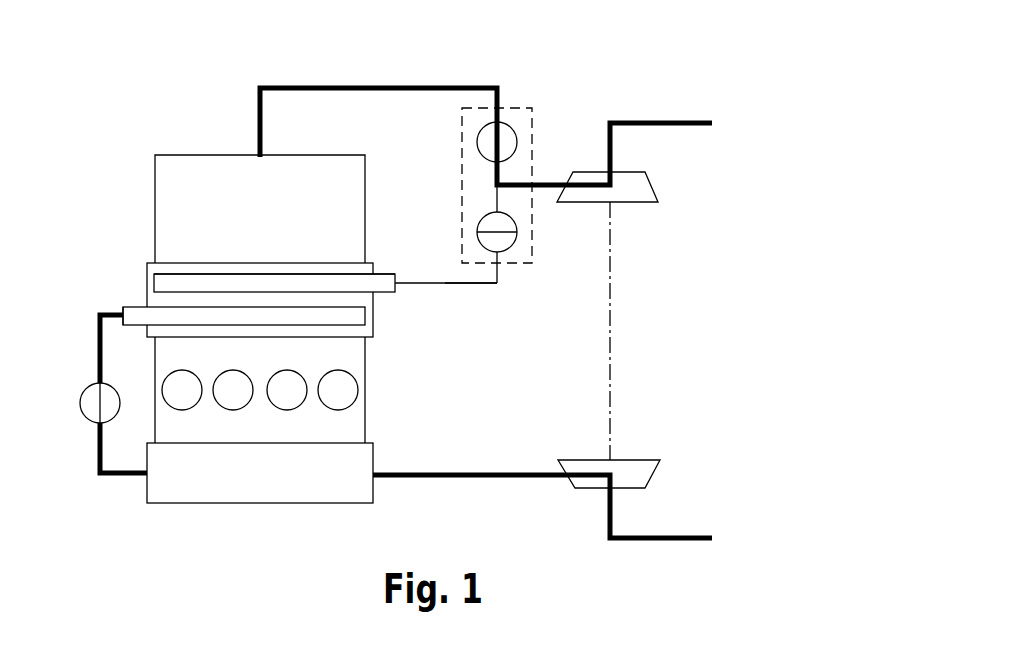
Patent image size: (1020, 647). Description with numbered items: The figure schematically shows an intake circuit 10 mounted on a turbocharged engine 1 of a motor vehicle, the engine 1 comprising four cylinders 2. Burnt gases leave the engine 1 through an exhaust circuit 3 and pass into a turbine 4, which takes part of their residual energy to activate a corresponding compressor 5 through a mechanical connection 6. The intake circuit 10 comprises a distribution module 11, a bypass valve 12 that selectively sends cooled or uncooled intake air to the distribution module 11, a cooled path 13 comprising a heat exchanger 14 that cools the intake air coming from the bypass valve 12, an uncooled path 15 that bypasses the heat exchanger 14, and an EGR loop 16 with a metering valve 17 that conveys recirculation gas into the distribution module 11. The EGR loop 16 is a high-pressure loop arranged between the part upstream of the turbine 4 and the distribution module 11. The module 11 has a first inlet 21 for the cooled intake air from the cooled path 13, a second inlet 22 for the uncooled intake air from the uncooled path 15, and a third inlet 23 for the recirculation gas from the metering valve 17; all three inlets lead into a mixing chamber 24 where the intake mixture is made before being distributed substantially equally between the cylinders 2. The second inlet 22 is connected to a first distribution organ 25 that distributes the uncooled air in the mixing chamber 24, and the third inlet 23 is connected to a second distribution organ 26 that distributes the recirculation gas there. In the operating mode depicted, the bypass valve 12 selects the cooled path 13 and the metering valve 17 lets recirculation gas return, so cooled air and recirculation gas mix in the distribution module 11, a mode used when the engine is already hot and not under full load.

The turbocharged engine 1 is at (366, 420).
The cylinders 2 is at (182, 387).
The exhaust circuit 3 is at (527, 494).
The turbine 4 is at (660, 470).
The compressor 5 is at (655, 180).
The mechanical connection 6 is at (612, 305).
The intake circuit 10 is at (205, 78).
The distribution module 11 is at (131, 278).
The bypass valve 12 is at (516, 108).
The cooled path 13 is at (296, 86).
The heat exchanger 14 is at (192, 182).
The uncooled path 15 is at (445, 284).
The EGR loop 16 is at (100, 455).
The metering valve 17 is at (80, 395).
The first inlet 21 is at (332, 262).
The second inlet 22 is at (417, 278).
The third inlet 23 is at (122, 310).
The mixing chamber 24 is at (186, 268).
The first distribution organ 25 is at (270, 282).
The second distribution organ 26 is at (310, 318).